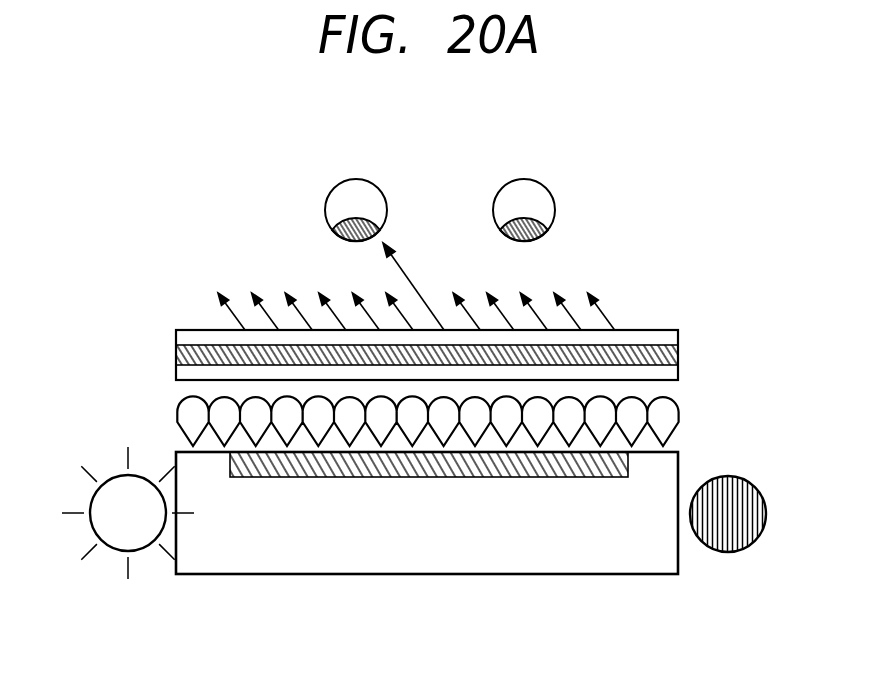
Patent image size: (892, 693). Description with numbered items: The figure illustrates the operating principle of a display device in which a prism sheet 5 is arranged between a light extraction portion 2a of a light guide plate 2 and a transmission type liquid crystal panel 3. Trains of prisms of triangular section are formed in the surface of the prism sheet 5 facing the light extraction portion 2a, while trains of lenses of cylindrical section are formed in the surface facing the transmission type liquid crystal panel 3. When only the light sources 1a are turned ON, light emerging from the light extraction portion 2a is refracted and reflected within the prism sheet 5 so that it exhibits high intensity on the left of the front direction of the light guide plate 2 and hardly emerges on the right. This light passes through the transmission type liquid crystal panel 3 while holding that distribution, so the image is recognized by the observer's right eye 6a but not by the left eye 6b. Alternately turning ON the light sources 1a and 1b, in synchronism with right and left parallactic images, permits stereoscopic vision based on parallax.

The light source 1a is at (123, 502).
The light source 1b is at (730, 497).
The light guide plate 2 is at (255, 543).
The light extraction portion 2a is at (415, 467).
The transmission type liquid crystal panel 3 is at (652, 337).
The prism sheet 5 is at (665, 408).
The right eye 6a is at (355, 192).
The left eye 6b is at (525, 192).